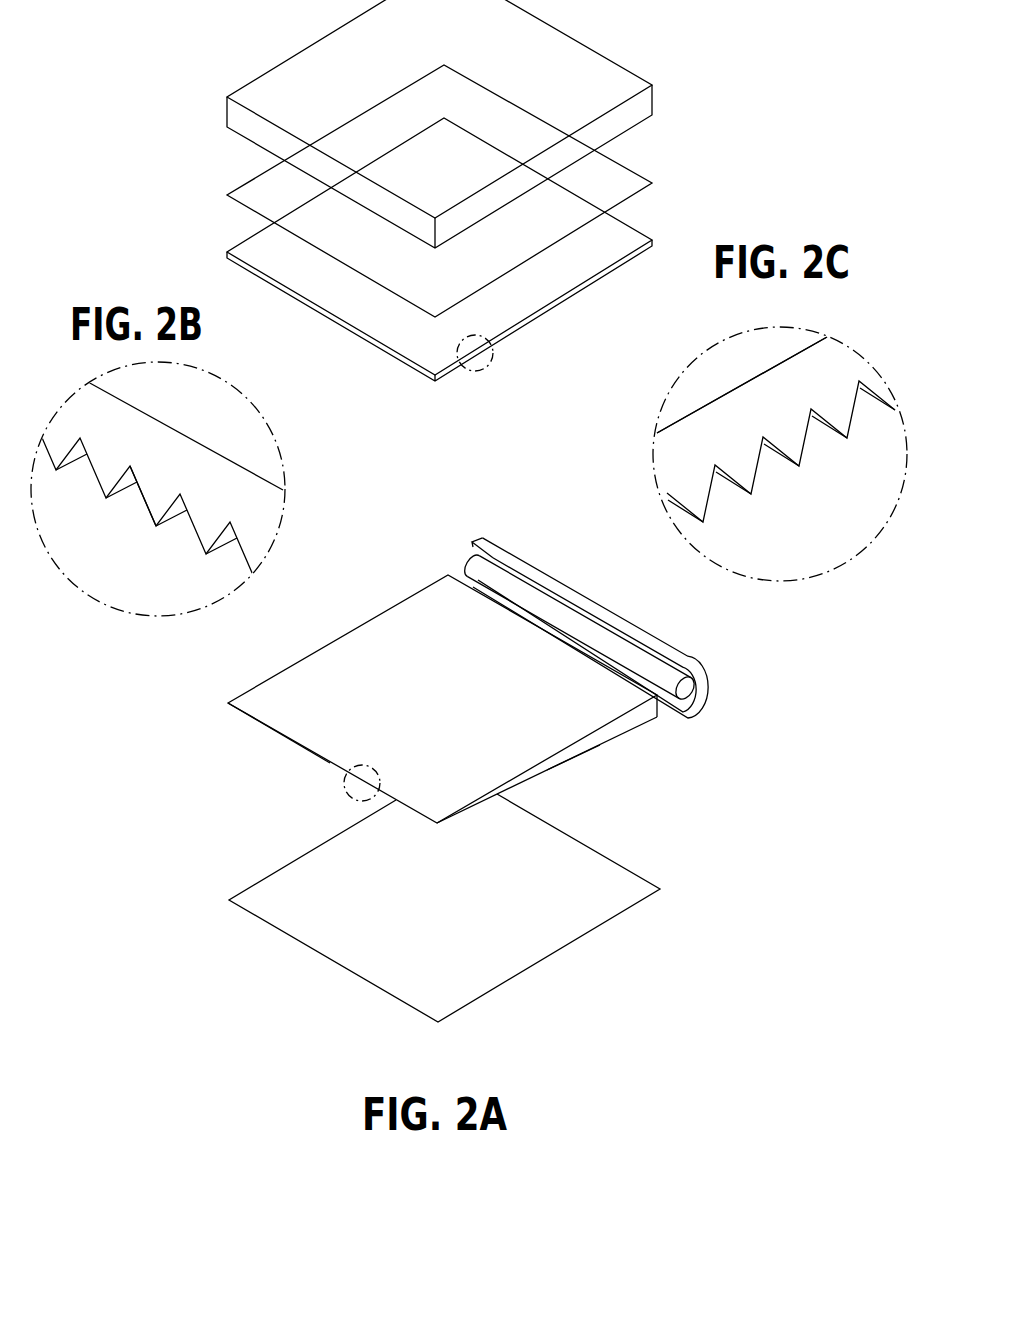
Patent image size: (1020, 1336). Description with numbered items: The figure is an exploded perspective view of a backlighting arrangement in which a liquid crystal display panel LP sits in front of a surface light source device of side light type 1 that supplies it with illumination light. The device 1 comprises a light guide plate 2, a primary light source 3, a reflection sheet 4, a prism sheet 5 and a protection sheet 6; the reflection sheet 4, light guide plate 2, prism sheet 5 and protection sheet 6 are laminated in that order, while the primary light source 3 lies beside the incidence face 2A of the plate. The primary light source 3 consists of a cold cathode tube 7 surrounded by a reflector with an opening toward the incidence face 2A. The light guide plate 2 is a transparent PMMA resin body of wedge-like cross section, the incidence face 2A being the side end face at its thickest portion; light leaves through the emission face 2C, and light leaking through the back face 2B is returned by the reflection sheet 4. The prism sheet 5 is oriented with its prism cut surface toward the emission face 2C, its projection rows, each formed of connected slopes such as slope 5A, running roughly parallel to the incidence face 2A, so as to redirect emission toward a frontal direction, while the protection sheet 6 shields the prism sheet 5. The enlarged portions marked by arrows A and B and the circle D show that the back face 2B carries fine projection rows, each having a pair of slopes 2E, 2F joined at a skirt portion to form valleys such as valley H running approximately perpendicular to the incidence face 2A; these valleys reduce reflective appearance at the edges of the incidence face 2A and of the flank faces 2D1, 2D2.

In FIG. 2A, the surface light source device of side light type 1 is at (208, 993).
In FIG. 2A, the light guide plate 2 is at (435, 682).
In FIG. 2A, the incidence face 2A is at (639, 670).
In FIG. 2A, the back face 2B is at (623, 758).
In FIG. 2C, the back face 2B is at (858, 420).
In FIG. 2A, the emission face 2C is at (440, 598).
In FIG. 2A, the flank face 2D1 is at (573, 750).
In FIG. 2A, the flank face 2D2 is at (243, 693).
In FIG. 2B, the slope 2E is at (78, 456).
In FIG. 2B, the slope 2F is at (192, 536).
In FIG. 2A, the primary light source 3 is at (725, 686).
In FIG. 2A, the reflection sheet 4 is at (392, 978).
In FIG. 2A, the prism sheet 5 is at (248, 247).
In FIG. 2C, the slope 5A is at (898, 408).
In FIG. 2A, the protection sheet 6 is at (258, 187).
In FIG. 2A, the cold cathode tube 7 is at (686, 690).
In FIG. 2A, the liquid crystal display panel LP is at (247, 123).
In FIG. 2A, the arrow A is at (215, 610).
In FIG. 2A, the arrow B is at (687, 665).
In FIG. 2A, the region D is at (497, 355).
In FIG. 2B, the valley H is at (128, 495).